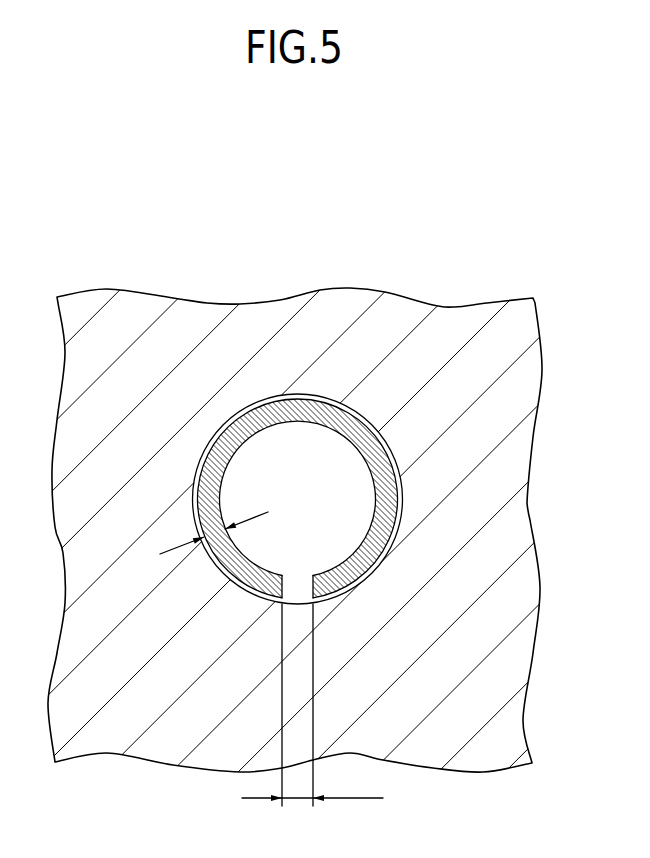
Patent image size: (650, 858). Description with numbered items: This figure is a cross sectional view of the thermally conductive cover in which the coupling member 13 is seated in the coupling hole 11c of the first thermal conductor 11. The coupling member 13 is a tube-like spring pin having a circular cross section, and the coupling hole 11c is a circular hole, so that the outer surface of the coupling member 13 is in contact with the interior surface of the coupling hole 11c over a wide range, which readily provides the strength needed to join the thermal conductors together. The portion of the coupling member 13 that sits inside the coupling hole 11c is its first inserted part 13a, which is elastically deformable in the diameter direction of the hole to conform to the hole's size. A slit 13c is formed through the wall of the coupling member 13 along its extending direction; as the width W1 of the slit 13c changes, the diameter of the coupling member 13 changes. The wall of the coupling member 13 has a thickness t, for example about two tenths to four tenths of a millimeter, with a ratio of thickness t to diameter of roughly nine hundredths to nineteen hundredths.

The first thermal conductor 11 is at (244, 322).
The coupling hole 11c is at (401, 500).
The coupling member 13 is at (295, 476).
The first inserted part 13a is at (323, 400).
The slit 13c is at (302, 594).
The thickness t is at (214, 523).
The width W1 is at (312, 718).